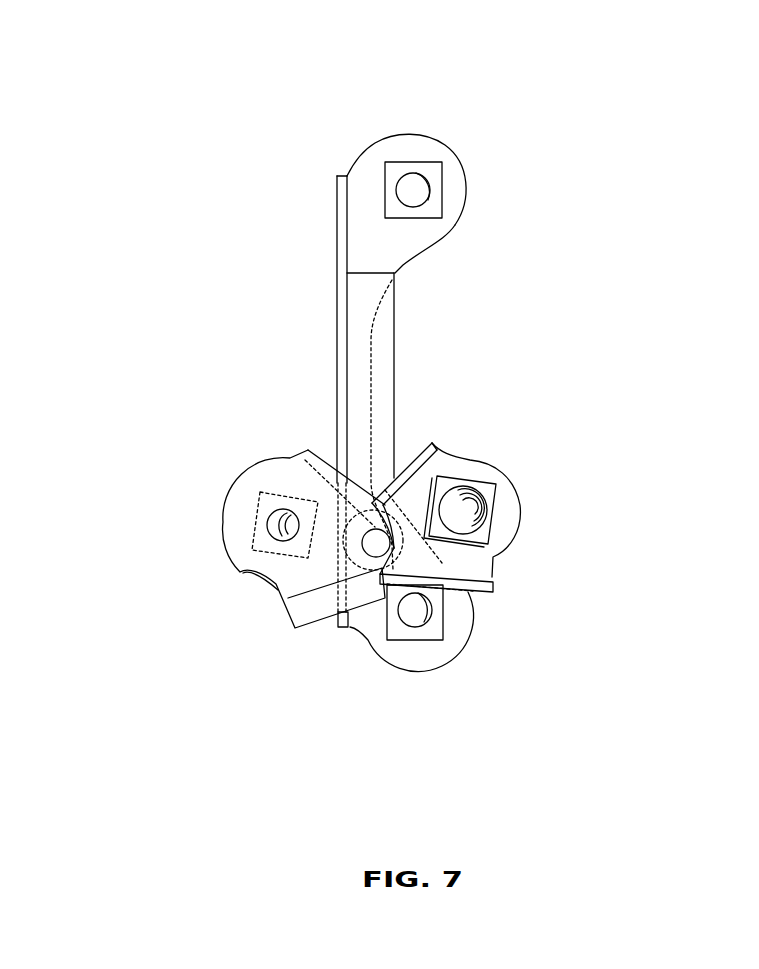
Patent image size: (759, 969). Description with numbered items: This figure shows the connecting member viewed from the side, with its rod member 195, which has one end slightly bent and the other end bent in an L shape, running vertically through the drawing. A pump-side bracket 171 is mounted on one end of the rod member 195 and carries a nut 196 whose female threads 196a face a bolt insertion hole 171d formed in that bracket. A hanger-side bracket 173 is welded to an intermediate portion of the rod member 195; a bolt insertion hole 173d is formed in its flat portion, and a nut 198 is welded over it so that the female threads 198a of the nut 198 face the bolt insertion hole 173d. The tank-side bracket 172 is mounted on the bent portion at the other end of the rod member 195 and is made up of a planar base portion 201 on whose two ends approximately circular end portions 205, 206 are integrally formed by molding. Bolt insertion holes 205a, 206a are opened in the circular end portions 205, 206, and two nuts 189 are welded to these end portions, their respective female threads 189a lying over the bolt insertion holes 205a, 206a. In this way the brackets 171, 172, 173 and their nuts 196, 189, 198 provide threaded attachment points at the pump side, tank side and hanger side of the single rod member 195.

The pump-side bracket 171 is at (272, 463).
The bolt insertion hole 171d is at (270, 512).
The tank-side bracket 172 is at (335, 223).
The hanger-side bracket 173 is at (515, 480).
The bolt insertion hole 173d is at (455, 493).
The nut 189 is at (402, 158).
The female threads 189a is at (423, 397).
The rod member 195 is at (388, 382).
The nut 196 is at (250, 533).
The female threads 196a is at (282, 540).
The nut 198 is at (483, 488).
The female threads 198a is at (475, 512).
The base portion 201 is at (403, 265).
The circular end portion 205 is at (430, 132).
The bolt insertion hole 205a is at (433, 187).
The circular end portion 206 is at (420, 655).
The bolt insertion hole 206a is at (420, 612).